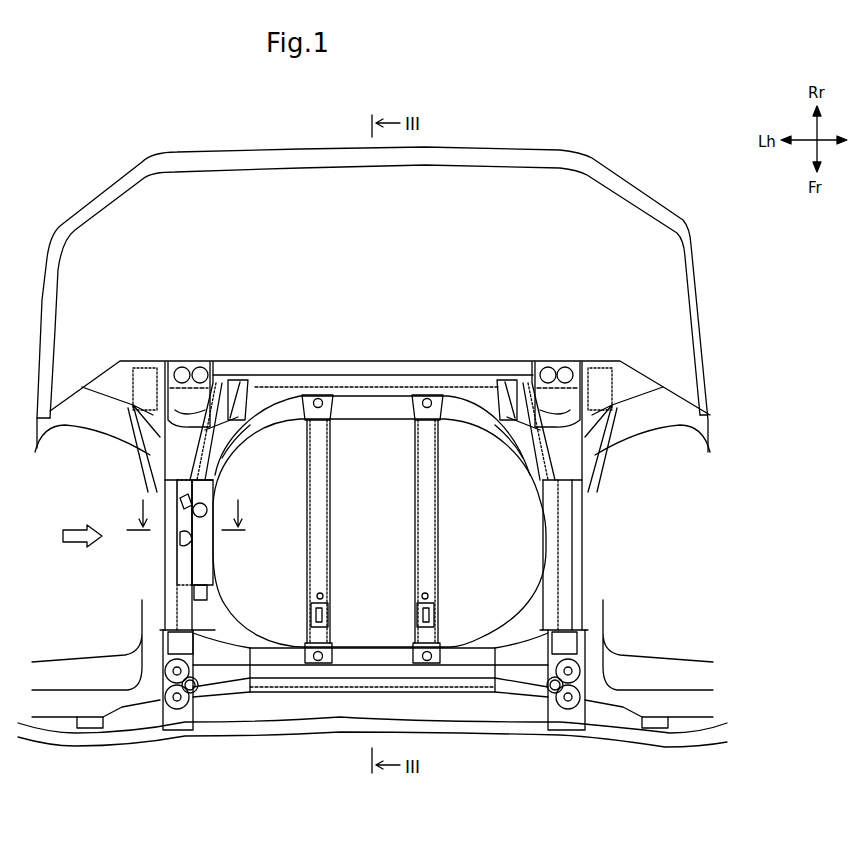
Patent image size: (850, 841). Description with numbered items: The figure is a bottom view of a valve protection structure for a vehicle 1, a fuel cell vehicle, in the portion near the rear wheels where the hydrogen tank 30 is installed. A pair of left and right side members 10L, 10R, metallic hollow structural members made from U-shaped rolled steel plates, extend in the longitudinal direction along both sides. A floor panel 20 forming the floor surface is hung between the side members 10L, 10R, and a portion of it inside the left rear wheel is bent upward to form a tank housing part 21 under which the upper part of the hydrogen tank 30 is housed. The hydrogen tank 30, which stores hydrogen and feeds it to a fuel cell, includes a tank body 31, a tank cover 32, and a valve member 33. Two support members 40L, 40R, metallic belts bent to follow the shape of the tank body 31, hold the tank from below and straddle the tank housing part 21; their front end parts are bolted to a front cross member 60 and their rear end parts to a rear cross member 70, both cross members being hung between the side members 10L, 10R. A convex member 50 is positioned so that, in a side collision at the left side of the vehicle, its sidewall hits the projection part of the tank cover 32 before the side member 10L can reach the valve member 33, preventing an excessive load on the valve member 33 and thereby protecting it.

The vehicle 1 is at (372, 434).
The left side member 10L is at (148, 546).
The right side member 10R is at (598, 546).
The floor panel 20 is at (587, 662).
The tank housing part 21 is at (532, 617).
The hydrogen tank 30 is at (355, 322).
The tank body 31 is at (358, 460).
The tank cover 32 is at (247, 417).
The valve member 33 is at (207, 405).
The left support member 40L is at (325, 545).
The right support member 40R is at (435, 545).
The convex member 50 is at (175, 553).
The front cross member 60 is at (353, 673).
The rear cross member 70 is at (483, 410).